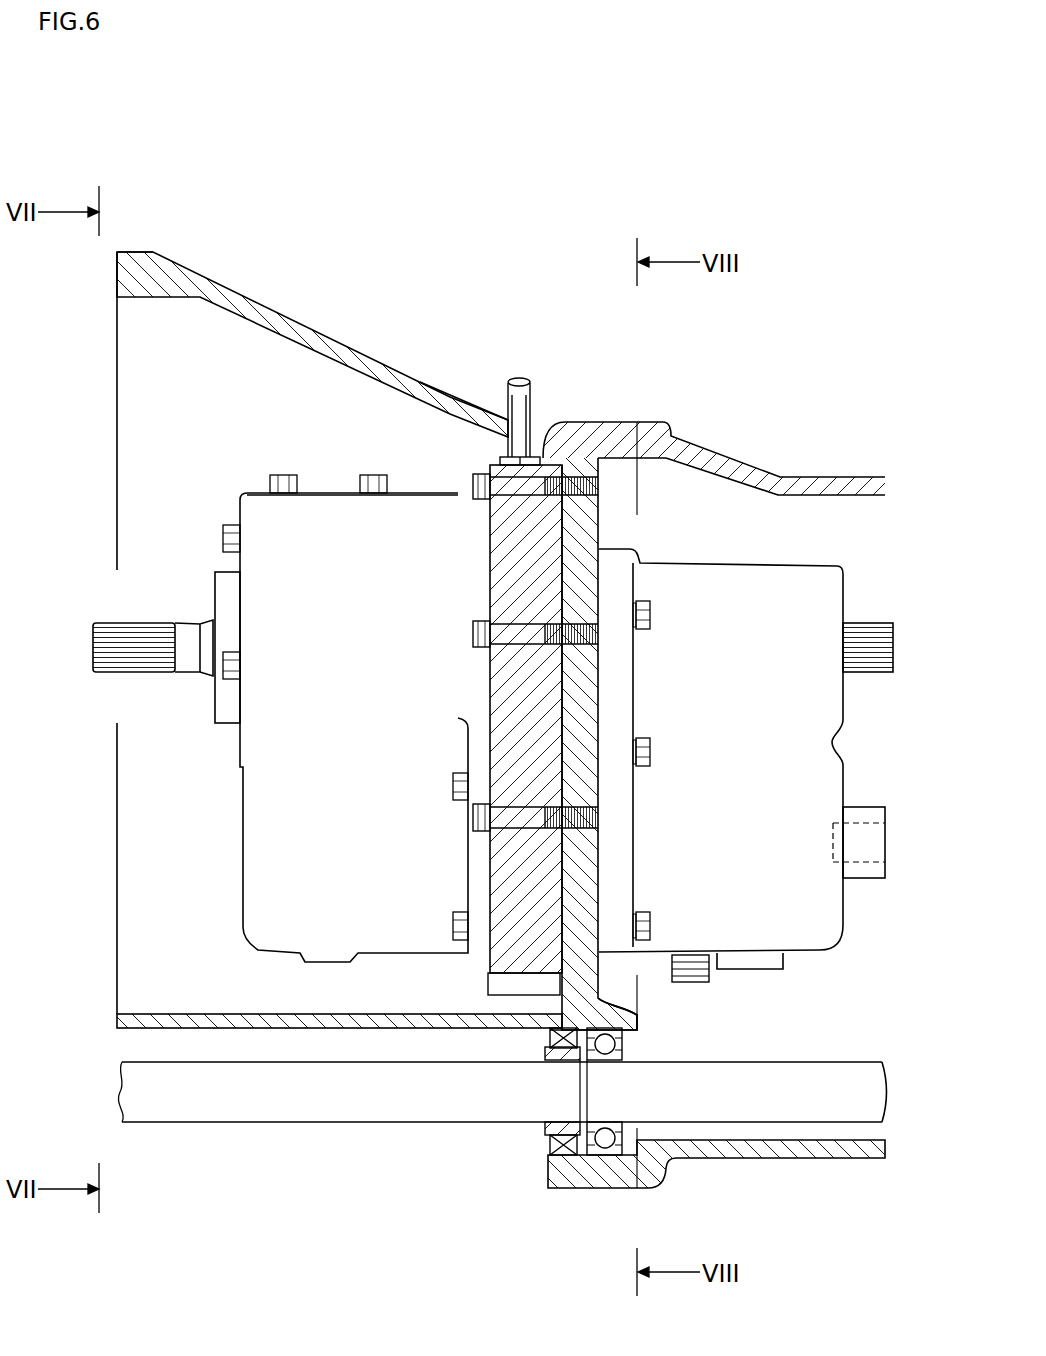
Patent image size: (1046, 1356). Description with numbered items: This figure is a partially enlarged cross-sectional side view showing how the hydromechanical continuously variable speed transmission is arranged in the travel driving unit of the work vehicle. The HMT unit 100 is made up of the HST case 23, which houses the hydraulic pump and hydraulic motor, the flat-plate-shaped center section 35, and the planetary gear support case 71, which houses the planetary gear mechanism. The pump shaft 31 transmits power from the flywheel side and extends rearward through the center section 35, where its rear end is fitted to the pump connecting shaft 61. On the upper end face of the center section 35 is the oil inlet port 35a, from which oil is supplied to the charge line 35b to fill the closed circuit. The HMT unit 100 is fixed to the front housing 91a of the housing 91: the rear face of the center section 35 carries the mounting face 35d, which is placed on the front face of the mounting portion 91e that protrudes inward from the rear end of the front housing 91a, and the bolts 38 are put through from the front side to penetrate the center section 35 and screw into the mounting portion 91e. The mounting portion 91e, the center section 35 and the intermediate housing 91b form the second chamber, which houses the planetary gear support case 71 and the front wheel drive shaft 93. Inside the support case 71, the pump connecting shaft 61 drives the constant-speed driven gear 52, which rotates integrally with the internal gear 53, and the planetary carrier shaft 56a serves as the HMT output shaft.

The housing 91 is at (306, 318).
The front housing 91a is at (243, 305).
The intermediate housing 91b is at (692, 458).
The mounting portion 91e is at (577, 968).
The HMT unit 100 is at (446, 385).
The center section 35 is at (497, 980).
The oil inlet port 35a is at (520, 455).
The charge line 35b is at (518, 378).
The mounting face 35d is at (578, 515).
The bolts 38 is at (616, 515).
The HST case 23 is at (268, 895).
The pump shaft 31 is at (158, 623).
The pump connecting shaft 61 is at (867, 627).
The planetary gear support case 71 is at (795, 925).
The planetary carrier shaft 56a is at (857, 866).
The constant-speed driven gear 52 is at (682, 967).
The internal gear 53 is at (735, 960).
The front wheel drive shaft 93 is at (383, 1098).